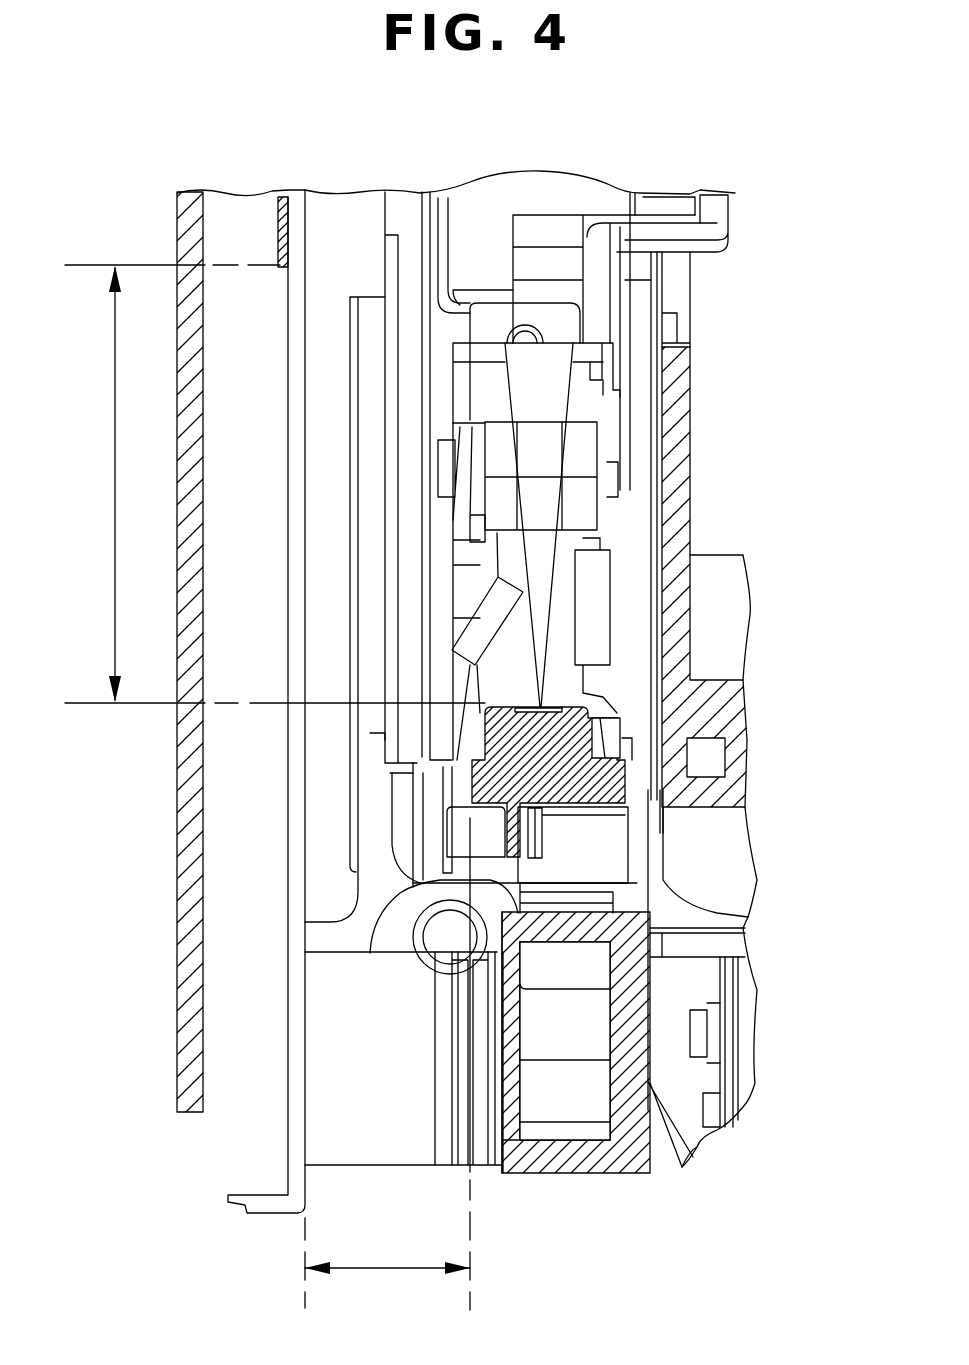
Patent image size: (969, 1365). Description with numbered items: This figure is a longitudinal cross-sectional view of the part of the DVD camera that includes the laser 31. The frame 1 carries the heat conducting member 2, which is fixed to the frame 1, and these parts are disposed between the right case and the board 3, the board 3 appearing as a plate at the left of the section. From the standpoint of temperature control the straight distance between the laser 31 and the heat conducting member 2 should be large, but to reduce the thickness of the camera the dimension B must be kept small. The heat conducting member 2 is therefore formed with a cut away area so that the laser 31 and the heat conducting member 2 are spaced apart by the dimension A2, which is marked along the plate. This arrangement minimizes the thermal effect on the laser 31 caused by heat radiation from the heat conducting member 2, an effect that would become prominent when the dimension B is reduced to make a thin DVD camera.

The frame 1 is at (292, 1075).
The heat conducting member 2 is at (278, 243).
The board 3 is at (180, 829).
The laser 31 is at (567, 770).
The dimension A2 is at (115, 484).
The dimension B is at (395, 1265).